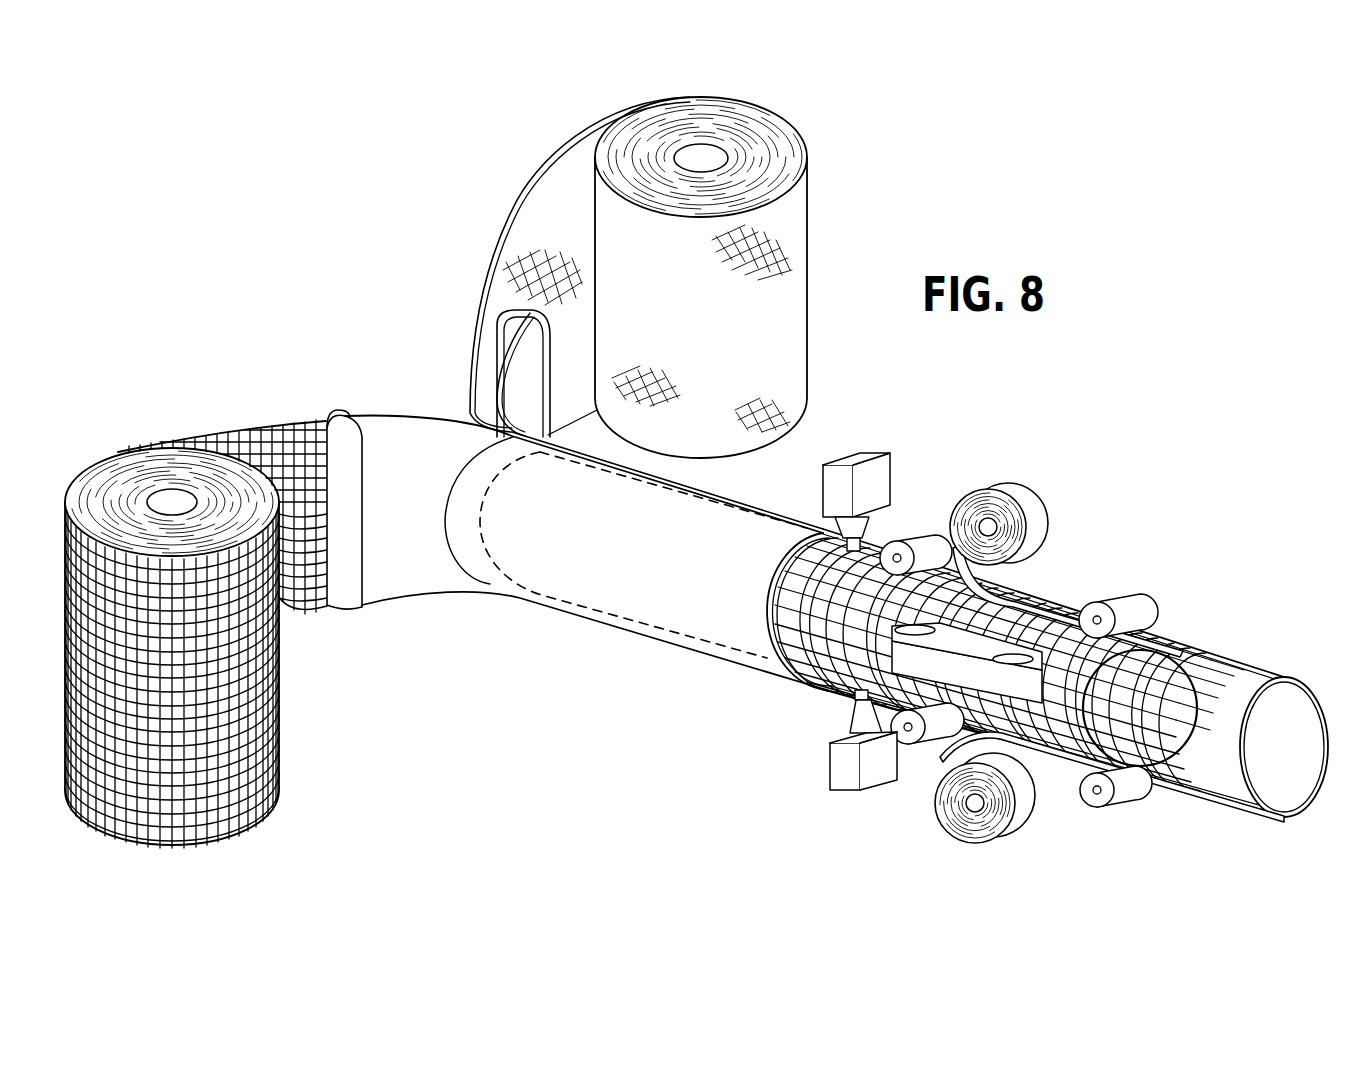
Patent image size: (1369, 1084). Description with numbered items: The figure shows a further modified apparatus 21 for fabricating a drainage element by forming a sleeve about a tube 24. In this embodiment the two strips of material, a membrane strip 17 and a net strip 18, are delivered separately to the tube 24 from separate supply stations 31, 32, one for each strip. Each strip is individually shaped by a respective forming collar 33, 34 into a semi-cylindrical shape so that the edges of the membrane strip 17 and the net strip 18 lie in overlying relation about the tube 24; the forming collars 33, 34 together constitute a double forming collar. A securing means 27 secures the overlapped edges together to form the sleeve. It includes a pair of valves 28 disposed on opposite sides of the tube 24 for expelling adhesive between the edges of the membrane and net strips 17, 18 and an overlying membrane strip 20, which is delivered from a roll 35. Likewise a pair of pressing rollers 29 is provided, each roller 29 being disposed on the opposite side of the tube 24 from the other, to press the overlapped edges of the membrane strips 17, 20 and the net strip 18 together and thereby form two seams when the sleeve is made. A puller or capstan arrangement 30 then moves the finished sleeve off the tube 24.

The membrane strip 17 is at (478, 294).
The net strip 18 is at (282, 428).
The overlying membrane strip 20 is at (1213, 668).
The apparatus 21 is at (770, 490).
The tube 24 is at (658, 628).
The securing means 27 is at (861, 444).
The valve 28 is at (870, 540).
The pressing roller 29 is at (915, 540).
The puller or capstan arrangement 30 is at (1033, 700).
The supply station 31 is at (640, 115).
The supply station 32 is at (282, 717).
The forming collar 33 is at (653, 465).
The forming collar 34 is at (572, 618).
The roll 35 is at (1040, 500).